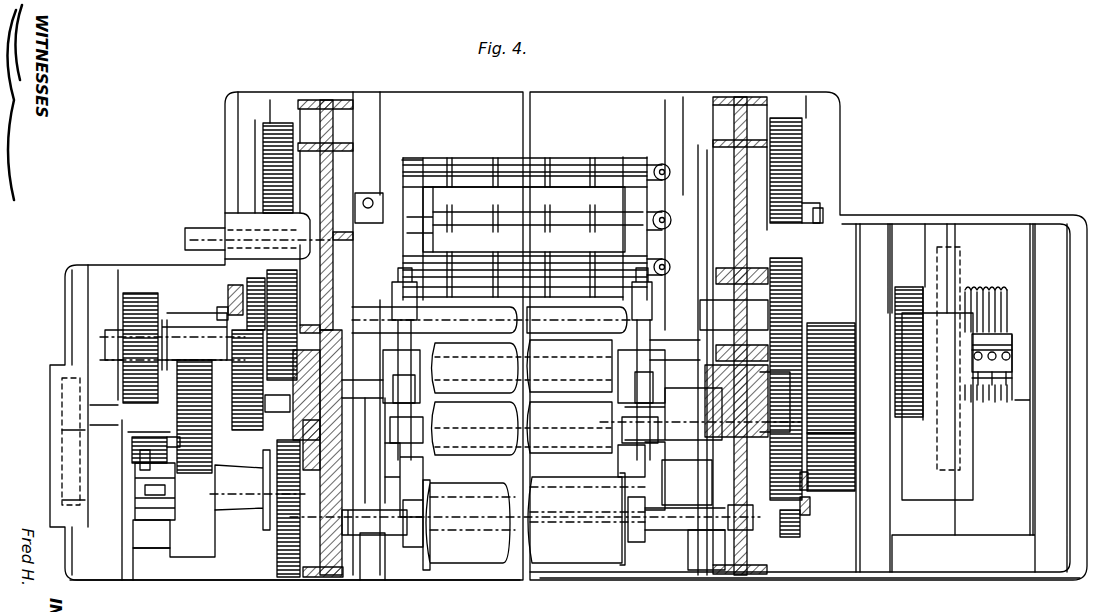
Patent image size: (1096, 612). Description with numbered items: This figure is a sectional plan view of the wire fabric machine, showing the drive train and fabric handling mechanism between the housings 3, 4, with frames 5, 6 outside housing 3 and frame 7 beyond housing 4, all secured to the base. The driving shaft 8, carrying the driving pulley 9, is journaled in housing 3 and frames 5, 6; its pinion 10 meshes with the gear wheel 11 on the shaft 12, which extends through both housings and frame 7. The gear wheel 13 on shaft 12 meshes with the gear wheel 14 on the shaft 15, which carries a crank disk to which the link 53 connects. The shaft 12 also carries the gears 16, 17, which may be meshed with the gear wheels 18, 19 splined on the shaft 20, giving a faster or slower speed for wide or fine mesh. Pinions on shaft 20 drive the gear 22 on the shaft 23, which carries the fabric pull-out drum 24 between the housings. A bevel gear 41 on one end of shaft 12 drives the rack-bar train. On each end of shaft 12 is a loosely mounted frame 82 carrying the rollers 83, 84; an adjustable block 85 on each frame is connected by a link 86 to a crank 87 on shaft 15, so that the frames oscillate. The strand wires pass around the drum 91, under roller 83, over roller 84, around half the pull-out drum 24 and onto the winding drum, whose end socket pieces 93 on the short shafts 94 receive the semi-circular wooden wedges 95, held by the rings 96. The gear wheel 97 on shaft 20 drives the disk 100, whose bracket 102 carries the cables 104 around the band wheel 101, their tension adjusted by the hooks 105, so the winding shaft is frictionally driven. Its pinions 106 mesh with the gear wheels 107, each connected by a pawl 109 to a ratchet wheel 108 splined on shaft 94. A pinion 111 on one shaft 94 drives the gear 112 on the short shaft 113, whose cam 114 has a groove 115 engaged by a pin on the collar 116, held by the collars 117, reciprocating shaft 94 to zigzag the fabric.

The housing 3 is at (742, 576).
The housing 4 is at (344, 560).
The frame 5 is at (873, 398).
The frame 6 is at (979, 398).
The frame 7 is at (156, 500).
The driving shaft 8 is at (1025, 410).
The driving pulley 9 is at (937, 373).
The pinion 10 is at (838, 413).
The gear wheel 11 is at (840, 452).
The shaft 12 is at (694, 410).
The gear wheel 13 is at (812, 470).
The gear wheel 14 is at (792, 292).
The shaft 15 is at (220, 284).
The gear 16 is at (170, 478).
The gear 17 is at (276, 355).
The gear wheel 18 is at (140, 310).
The gear wheel 19 is at (222, 348).
The shaft 20 is at (184, 345).
The gear 22 is at (278, 175).
The shaft 23 is at (826, 213).
The fabric pull-out drum 24 is at (556, 192).
The bevel gear 41 is at (322, 388).
The link 53 is at (228, 306).
The frame 82 is at (415, 388).
The roller 83 is at (522, 428).
The roller 84 is at (522, 366).
The adjustable block 85 is at (410, 405).
The link 86 is at (412, 338).
The crank 87 is at (428, 322).
The drum 91 is at (586, 519).
The end socket piece 93 is at (690, 470).
The short shaft 94 is at (395, 515).
The semi-circular wooden wedge 95 is at (500, 515).
The ring 96 is at (622, 462).
The gear wheel 97 is at (908, 290).
The disk 100 is at (950, 272).
The band wheel 101 is at (1015, 315).
The bracket 102 is at (1010, 380).
The cable 104 is at (1003, 306).
The adjustable hook 105 is at (1008, 357).
The pinion 106 is at (278, 400).
The gear wheel 107 is at (800, 528).
The ratchet wheel 108 is at (810, 511).
The pawl 109 is at (268, 490).
The pinion 111 is at (65, 492).
The gear 112 is at (65, 452).
The short shaft 113 is at (128, 438).
The cam 114 is at (138, 458).
The groove 115 is at (140, 486).
The collar 116 is at (150, 486).
The collar 117 is at (135, 506).